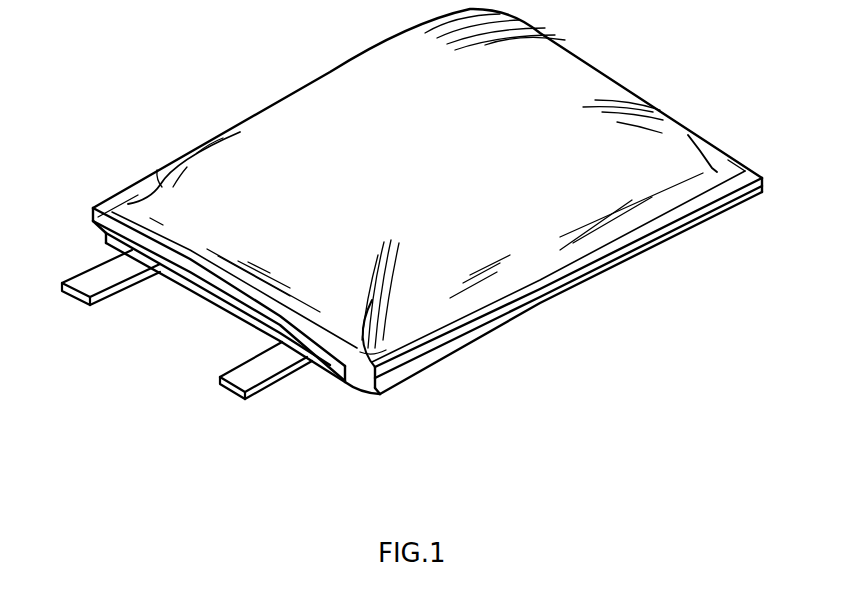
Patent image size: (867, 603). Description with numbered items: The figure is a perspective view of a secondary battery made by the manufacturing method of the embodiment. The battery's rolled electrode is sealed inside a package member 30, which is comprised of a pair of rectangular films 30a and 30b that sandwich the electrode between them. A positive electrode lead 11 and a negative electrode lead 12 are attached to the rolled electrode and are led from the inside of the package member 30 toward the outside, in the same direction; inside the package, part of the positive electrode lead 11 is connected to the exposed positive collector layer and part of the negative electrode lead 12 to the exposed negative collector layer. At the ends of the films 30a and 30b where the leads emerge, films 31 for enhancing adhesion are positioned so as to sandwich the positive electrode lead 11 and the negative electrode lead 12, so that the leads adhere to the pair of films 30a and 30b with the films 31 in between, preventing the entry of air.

The positive electrode lead 11 is at (82, 280).
The negative electrode lead 12 is at (237, 375).
The package member 30 is at (427, 215).
The film 30a is at (467, 326).
The film 30b is at (527, 310).
The film for enhancing adhesion 31 is at (191, 286).